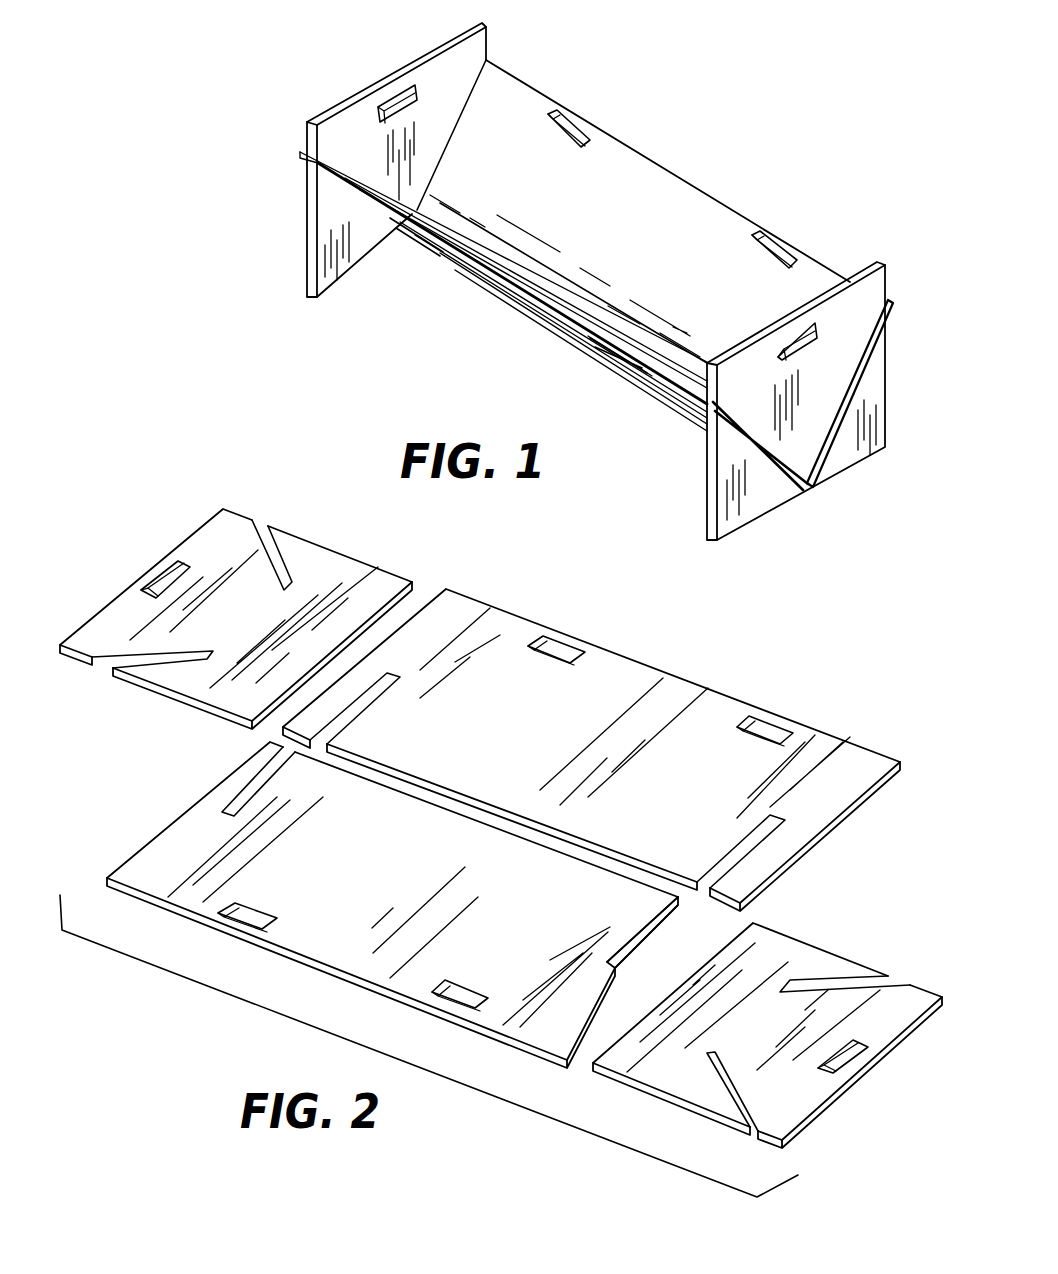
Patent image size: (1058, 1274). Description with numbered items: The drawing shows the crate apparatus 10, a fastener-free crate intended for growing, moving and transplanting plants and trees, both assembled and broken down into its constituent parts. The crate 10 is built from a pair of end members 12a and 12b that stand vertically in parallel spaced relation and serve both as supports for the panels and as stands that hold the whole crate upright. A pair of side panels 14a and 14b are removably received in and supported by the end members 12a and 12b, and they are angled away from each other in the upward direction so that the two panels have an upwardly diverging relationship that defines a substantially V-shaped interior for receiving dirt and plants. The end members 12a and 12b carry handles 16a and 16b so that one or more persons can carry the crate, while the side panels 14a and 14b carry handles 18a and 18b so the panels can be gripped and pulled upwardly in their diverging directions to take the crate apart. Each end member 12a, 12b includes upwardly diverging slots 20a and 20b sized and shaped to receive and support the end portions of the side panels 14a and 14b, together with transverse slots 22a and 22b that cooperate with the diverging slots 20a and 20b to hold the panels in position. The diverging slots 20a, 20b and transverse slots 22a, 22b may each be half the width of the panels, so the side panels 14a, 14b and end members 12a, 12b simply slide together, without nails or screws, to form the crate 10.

In FIG. 1, the crate apparatus 10 is at (562, 54).
In FIG. 2, the crate apparatus 10 is at (186, 491).
In FIG. 1, the end member 12a is at (305, 212).
In FIG. 2, the end member 12a is at (200, 525).
In FIG. 1, the end member 12b is at (870, 406).
In FIG. 2, the end member 12b is at (633, 1068).
In FIG. 1, the side panel 14a is at (470, 272).
In FIG. 2, the side panel 14a is at (383, 957).
In FIG. 1, the side panel 14b is at (663, 180).
In FIG. 2, the side panel 14b is at (668, 700).
In FIG. 1, the handle 16a is at (390, 102).
In FIG. 2, the handle 16a is at (155, 582).
In FIG. 1, the handle 16b is at (800, 338).
In FIG. 2, the handle 16b is at (847, 1060).
In FIG. 1, the handle 18a is at (612, 358).
In FIG. 2, the handle 18a is at (247, 920).
In FIG. 1, the handle 18b is at (585, 118).
In FIG. 2, the handle 18b is at (553, 655).
In FIG. 2, the upwardly diverging slot 20a is at (157, 658).
In FIG. 2, the upwardly diverging slot 20b is at (285, 545).
In FIG. 2, the transverse slot 22a is at (727, 857).
In FIG. 2, the transverse slot 22b is at (352, 712).